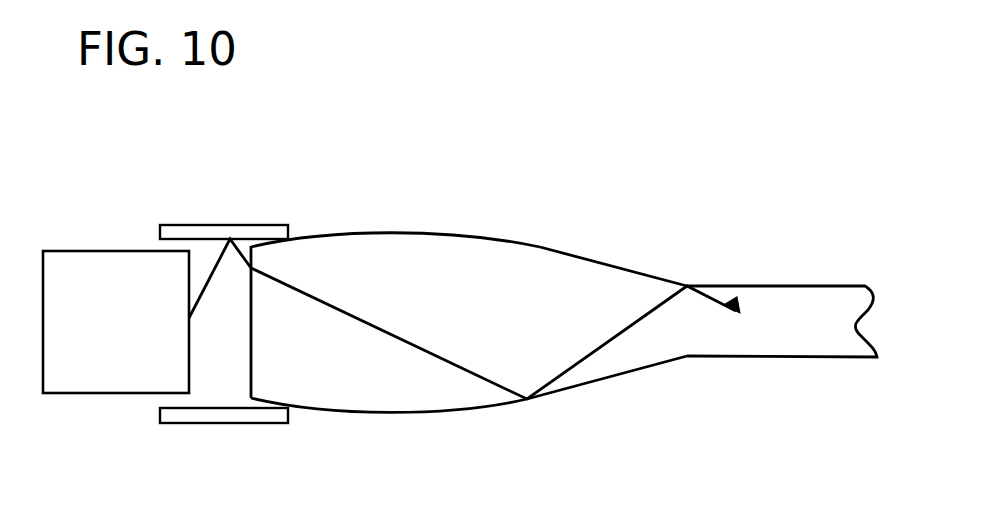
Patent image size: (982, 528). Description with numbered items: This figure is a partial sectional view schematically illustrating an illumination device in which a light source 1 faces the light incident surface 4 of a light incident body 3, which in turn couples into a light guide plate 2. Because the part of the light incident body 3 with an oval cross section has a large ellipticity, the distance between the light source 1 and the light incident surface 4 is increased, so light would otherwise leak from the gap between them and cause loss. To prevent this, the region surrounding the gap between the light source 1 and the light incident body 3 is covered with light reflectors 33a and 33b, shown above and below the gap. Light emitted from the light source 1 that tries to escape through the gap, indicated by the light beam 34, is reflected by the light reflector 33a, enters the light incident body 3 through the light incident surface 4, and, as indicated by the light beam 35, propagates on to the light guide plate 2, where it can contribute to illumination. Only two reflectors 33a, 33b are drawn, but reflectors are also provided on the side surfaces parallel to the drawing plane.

The light source 1 is at (79, 251).
The light guide plate 2 is at (795, 315).
The light incident body 3 is at (525, 283).
The light incident surface 4 is at (252, 337).
The light reflector 33a is at (237, 225).
The light reflector 33b is at (230, 423).
The light beam 34 is at (205, 292).
The light beam 35 is at (378, 327).